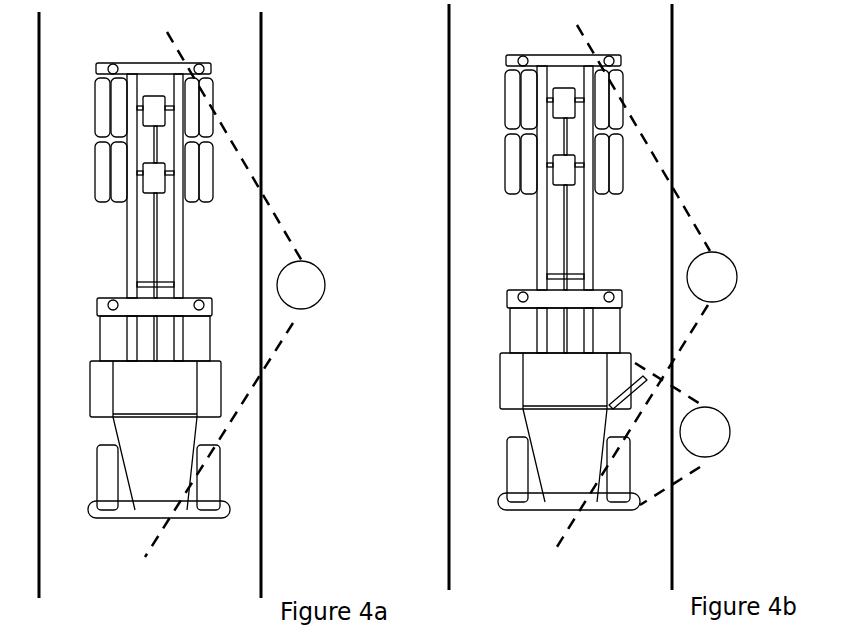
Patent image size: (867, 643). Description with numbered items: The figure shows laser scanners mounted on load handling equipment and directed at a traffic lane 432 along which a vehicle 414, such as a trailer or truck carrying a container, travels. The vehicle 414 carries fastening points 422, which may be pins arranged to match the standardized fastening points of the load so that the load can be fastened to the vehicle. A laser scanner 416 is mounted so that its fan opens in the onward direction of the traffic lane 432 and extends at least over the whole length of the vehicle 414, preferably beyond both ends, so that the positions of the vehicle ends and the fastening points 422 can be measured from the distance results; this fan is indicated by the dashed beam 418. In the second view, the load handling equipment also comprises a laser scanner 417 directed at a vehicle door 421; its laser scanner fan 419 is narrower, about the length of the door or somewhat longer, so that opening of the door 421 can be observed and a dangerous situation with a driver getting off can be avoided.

In FIG. 4A, the vehicle 414 is at (193, 507).
In FIG. 4B, the vehicle 414 is at (603, 499).
In FIG. 4A, the laser scanner 416 is at (326, 283).
In FIG. 4B, the laser scanner 416 is at (737, 278).
In FIG. 4B, the laser scanner 417 is at (730, 438).
In FIG. 4A, the light beam 418 is at (263, 370).
In FIG. 4B, the light beam 418 is at (675, 193).
In FIG. 4B, the laser scanner fan 419 is at (672, 478).
In FIG. 4B, the vehicle door 421 is at (643, 365).
In FIG. 4A, the fastening points 422 is at (113, 63).
In FIG. 4B, the fastening points 422 is at (523, 55).
In FIG. 4A, the traffic lane 432 is at (150, 305).
In FIG. 4B, the traffic lane 432 is at (560, 297).